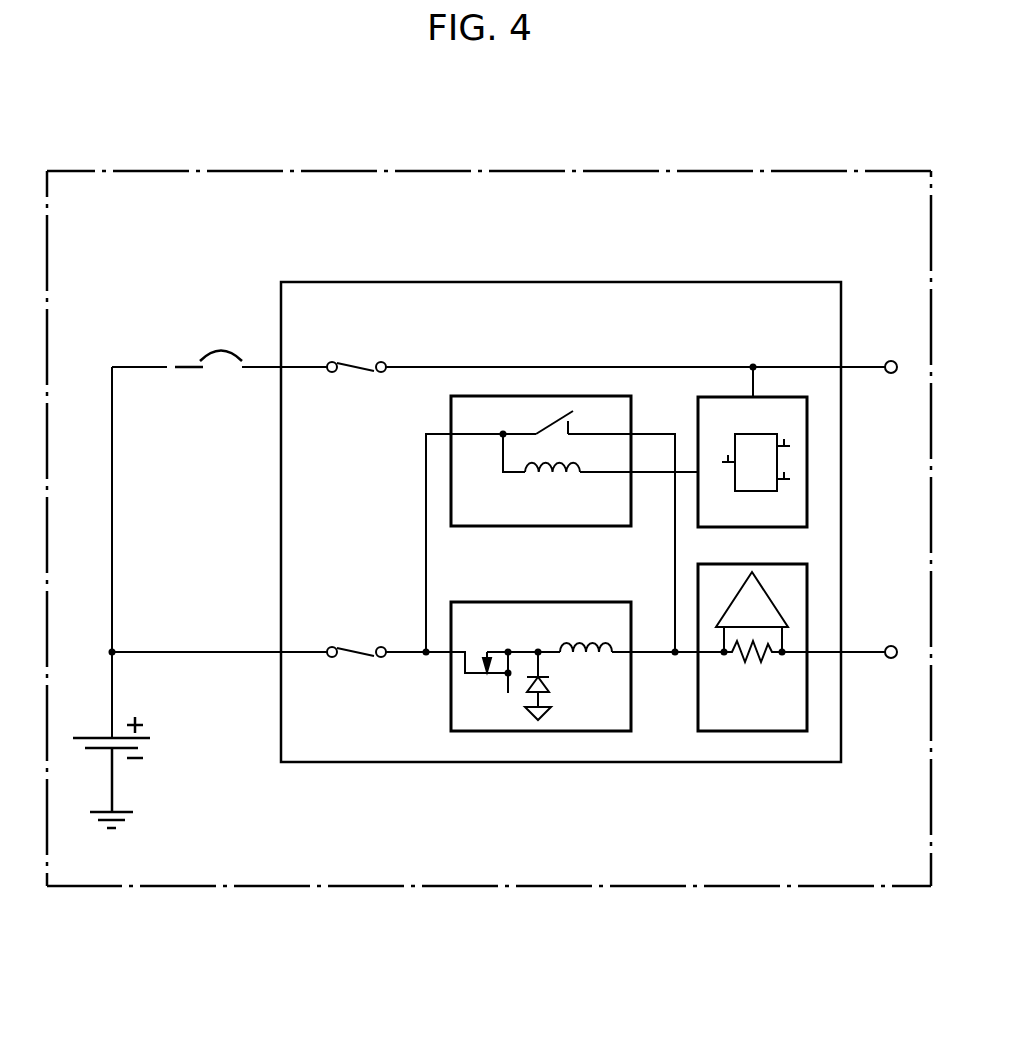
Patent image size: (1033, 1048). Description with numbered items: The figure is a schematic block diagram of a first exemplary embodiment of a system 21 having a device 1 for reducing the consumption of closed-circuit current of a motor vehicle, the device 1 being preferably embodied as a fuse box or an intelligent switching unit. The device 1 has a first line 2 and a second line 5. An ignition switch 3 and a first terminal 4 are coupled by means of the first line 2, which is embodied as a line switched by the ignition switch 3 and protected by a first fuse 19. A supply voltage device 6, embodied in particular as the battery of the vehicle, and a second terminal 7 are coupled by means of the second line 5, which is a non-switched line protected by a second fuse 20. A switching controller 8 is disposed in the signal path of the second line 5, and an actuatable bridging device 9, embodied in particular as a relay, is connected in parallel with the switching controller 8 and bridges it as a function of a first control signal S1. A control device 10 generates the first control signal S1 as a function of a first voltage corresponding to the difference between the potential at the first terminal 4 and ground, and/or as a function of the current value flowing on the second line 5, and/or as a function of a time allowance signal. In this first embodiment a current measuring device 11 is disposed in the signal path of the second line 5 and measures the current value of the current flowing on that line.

The device 1 is at (590, 281).
The first line 2 is at (502, 366).
The ignition switch 3 is at (222, 348).
The first terminal 4 is at (892, 360).
The second line 5 is at (407, 657).
The supply voltage device 6 is at (93, 737).
The second terminal 7 is at (892, 644).
The switching controller 8 is at (604, 720).
The bridging device 9 is at (603, 519).
The control device 10 is at (703, 518).
The current measuring device 11 is at (705, 718).
The first fuse 19 is at (371, 372).
The second fuse 20 is at (370, 658).
The system 21 is at (246, 170).
The first control signal S1 is at (660, 476).